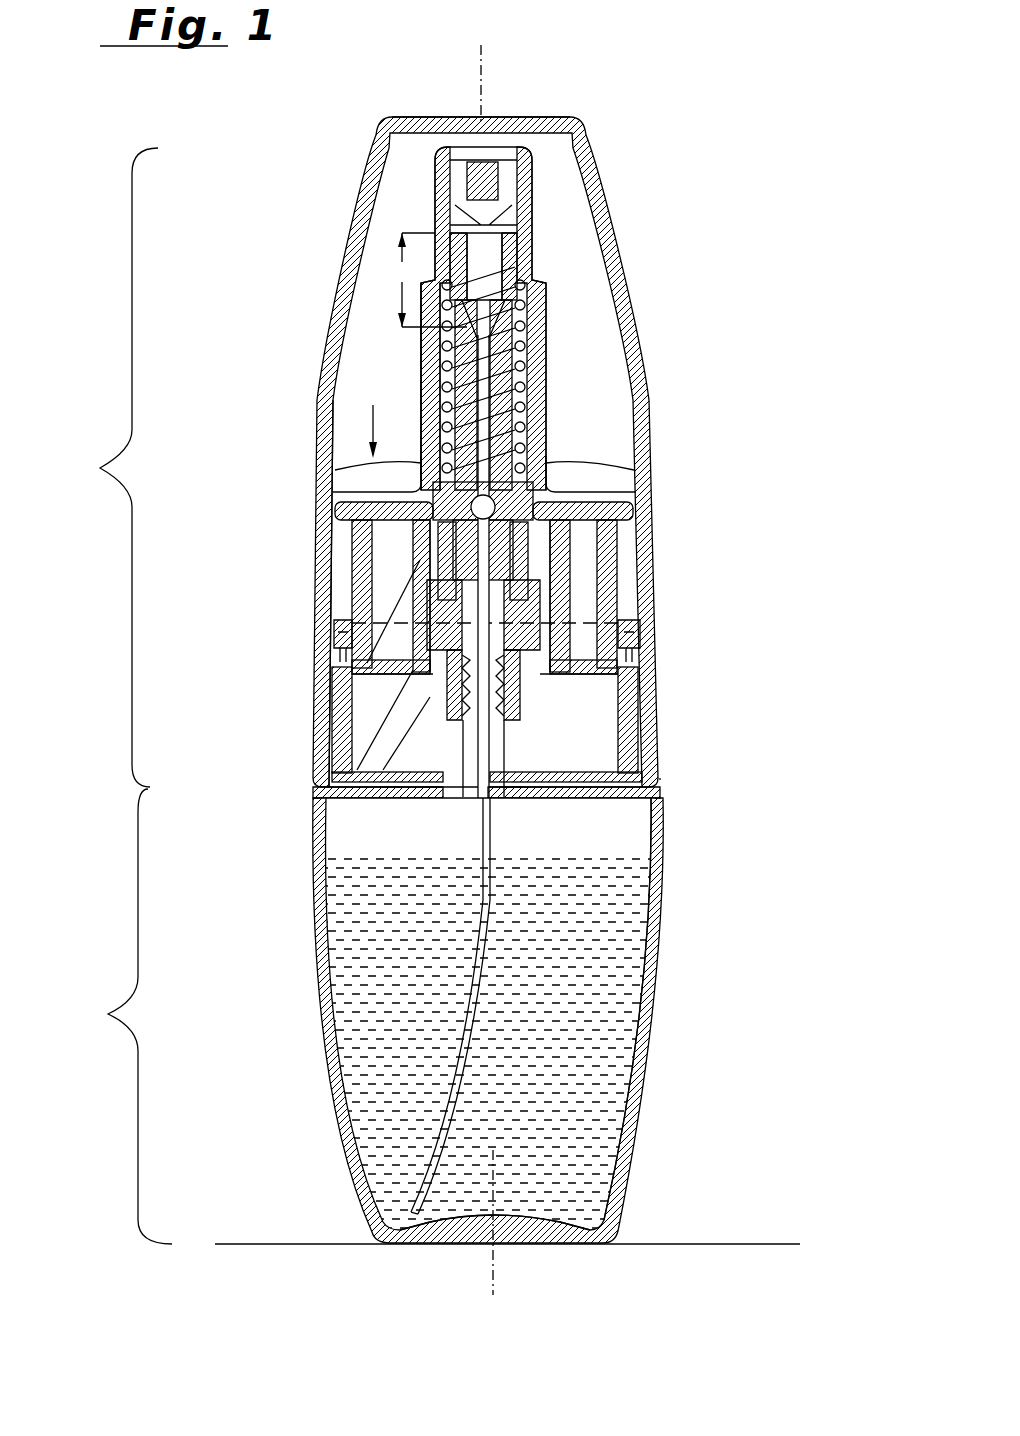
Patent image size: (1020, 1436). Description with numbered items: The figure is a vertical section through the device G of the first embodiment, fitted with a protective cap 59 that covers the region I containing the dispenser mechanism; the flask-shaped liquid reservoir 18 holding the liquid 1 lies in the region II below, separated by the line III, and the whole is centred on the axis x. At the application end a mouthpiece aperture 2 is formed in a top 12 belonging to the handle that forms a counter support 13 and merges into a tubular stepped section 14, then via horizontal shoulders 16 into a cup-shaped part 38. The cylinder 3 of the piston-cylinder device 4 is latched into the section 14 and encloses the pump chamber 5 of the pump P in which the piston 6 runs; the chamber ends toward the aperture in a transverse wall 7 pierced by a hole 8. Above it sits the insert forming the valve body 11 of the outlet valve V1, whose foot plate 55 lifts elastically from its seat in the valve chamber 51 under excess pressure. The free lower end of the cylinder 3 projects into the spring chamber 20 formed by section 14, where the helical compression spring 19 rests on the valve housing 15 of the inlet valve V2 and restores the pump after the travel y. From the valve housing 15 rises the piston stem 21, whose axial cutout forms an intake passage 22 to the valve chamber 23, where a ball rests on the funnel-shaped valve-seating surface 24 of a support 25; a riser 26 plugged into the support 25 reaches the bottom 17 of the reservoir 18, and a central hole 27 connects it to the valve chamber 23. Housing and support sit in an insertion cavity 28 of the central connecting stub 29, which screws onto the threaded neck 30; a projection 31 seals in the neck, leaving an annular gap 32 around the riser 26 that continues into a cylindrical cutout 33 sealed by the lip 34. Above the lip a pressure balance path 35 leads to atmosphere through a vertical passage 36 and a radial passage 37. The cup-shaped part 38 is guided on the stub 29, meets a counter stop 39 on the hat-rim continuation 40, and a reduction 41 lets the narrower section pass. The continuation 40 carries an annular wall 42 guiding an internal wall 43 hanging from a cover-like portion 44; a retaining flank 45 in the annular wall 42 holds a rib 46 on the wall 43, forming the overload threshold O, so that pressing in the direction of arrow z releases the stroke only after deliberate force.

The liquid 1 is at (610, 914).
The mouthpiece aperture 2 is at (468, 158).
The cylinder 3 is at (397, 340).
The piston-cylinder device 4 is at (413, 363).
The pump chamber 5 is at (535, 248).
The piston 6 is at (535, 270).
The transverse wall 7 is at (540, 230).
The hole 8 is at (447, 220).
The valve body 11 is at (573, 120).
The top 12 is at (523, 150).
The counter support 13 is at (600, 498).
The tubular stepped section 14 is at (328, 485).
The valve housing 15 is at (430, 510).
The shoulders 16 is at (345, 500).
The bottom 17 is at (527, 1217).
The liquid reservoir 18 is at (651, 1030).
The spring 19 is at (440, 397).
The spring chamber 20 is at (440, 402).
The piston stem 21 is at (545, 380).
The intake passage 22 is at (545, 405).
The valve chamber 23 is at (400, 512).
The valve-seating surface 24 is at (545, 562).
The support 25 is at (350, 693).
The riser 26 is at (490, 975).
The central hole 27 is at (522, 600).
The insertion cavity 28 is at (352, 668).
The central connecting stub 29 is at (350, 753).
The threaded neck 30 is at (655, 815).
The projection 31 is at (312, 822).
The annular gap 32 is at (516, 797).
The cylindrical cutout 33 is at (352, 722).
The lip 34 is at (579, 689).
The pressure balance path 35 is at (612, 655).
The vertical passage 36 is at (560, 650).
The radial passage 37 is at (547, 473).
The cup-shaped part 38 is at (403, 580).
The counter stop 39 is at (447, 787).
The continuation 40 is at (393, 787).
The reduction in cross-section 41 is at (427, 532).
The annular wall 42 is at (622, 728).
The internal wall 43 is at (417, 522).
The cover-like portion 44 is at (540, 535).
The retaining flank 45 is at (325, 683).
The rib 46 is at (340, 668).
The valve chamber 51 is at (455, 165).
The foot plate 55 is at (460, 178).
The protective cap 59 is at (340, 263).
The device G is at (262, 165).
The pump P is at (572, 320).
The overload threshold O is at (660, 667).
The outlet valve V1 is at (515, 175).
The inlet valve V2 is at (504, 491).
The region I is at (111, 467).
The container section II is at (122, 1016).
The interface plane III is at (662, 778).
The axis x is at (487, 659).
The travel y is at (431, 280).
The arrow z is at (386, 431).